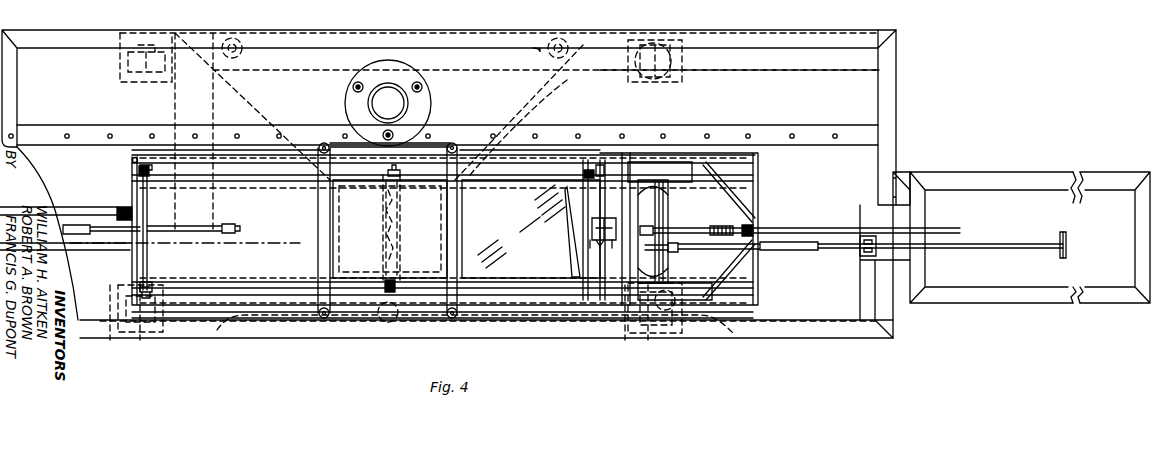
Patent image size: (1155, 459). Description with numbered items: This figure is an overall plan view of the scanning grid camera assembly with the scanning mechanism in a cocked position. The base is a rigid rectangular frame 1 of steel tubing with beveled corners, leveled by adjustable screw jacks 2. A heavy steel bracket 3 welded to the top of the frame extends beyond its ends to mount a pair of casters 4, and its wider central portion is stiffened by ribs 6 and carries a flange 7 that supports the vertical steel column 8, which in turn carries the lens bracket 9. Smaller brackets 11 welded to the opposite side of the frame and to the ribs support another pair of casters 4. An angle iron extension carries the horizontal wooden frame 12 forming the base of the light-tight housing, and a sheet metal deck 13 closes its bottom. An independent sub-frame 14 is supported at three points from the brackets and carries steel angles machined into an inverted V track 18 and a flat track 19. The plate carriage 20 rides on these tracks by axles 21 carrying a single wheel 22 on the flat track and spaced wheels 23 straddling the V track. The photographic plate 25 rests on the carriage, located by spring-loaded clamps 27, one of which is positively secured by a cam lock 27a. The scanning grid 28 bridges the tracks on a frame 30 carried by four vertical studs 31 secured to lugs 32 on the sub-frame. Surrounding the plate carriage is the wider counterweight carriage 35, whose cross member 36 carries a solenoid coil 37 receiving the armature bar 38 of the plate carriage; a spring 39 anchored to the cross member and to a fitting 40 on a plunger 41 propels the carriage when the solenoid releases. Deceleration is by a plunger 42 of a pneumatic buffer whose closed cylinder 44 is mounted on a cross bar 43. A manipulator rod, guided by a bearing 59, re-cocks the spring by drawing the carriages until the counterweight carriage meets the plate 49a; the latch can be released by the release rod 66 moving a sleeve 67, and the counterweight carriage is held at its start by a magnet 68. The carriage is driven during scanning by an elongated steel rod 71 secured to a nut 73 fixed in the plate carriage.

The rigid rectangular frame 1 is at (580, 35).
The adjustable screw jacks 2 is at (232, 40).
The bracket 3 is at (615, 80).
The casters 4 is at (140, 52).
The ribs 6 is at (305, 100).
The flange 7 is at (400, 72).
The steel column 8 is at (380, 85).
The lens bracket 9 is at (1105, 245).
The smaller brackets 11 is at (140, 335).
The horizontal wooden frame 12 is at (888, 95).
The sheet metal deck 13 is at (449, 184).
The sub-frame 14 is at (340, 245).
The inverted V track 18 is at (500, 298).
The flat track 19 is at (690, 178).
The plate carriage 20 is at (580, 290).
The axle 21 is at (400, 262).
The single wheel 22 is at (395, 170).
The spaced wheels 23 is at (390, 290).
The photographic plate 25 is at (509, 231).
The spring-loaded clamps 27 is at (397, 240).
The cam lock 27a is at (388, 215).
The scanning grid 28 is at (361, 223).
The frame 30 is at (330, 200).
The vertical studs 31 is at (320, 147).
The lugs 32 is at (415, 338).
The counterweight carriage 35 is at (720, 300).
The cross member 36 is at (640, 250).
The solenoid coil 37 is at (607, 255).
The armature bar 38 is at (585, 220).
The spring 39 is at (713, 214).
The fitting 40 is at (745, 226).
The plunger 41 is at (710, 245).
The plunger 42 is at (240, 228).
The cross bar 43 is at (137, 250).
The closed cylinder 44 is at (77, 226).
The plate 49a is at (857, 252).
The bearing 59 is at (678, 252).
The release rod 66 is at (950, 250).
The sleeve 67 is at (795, 252).
The magnet 68 is at (125, 206).
The elongated steel rod 71 is at (268, 247).
The nut 73 is at (385, 240).